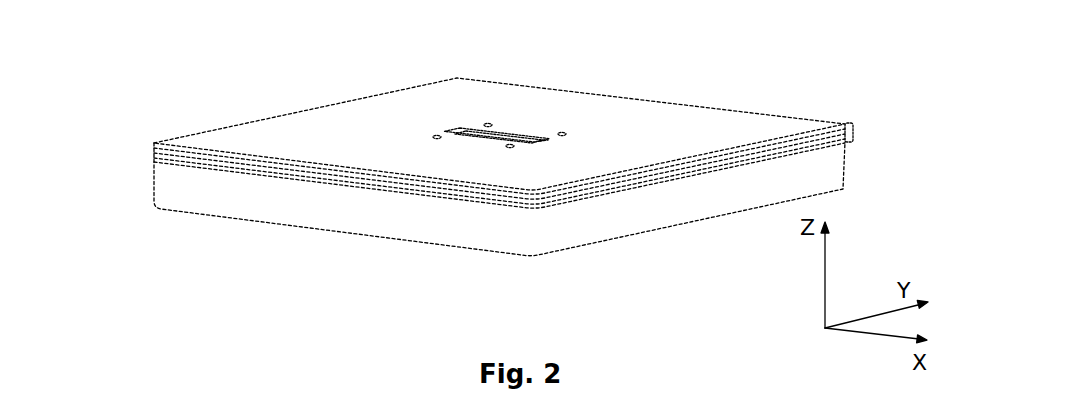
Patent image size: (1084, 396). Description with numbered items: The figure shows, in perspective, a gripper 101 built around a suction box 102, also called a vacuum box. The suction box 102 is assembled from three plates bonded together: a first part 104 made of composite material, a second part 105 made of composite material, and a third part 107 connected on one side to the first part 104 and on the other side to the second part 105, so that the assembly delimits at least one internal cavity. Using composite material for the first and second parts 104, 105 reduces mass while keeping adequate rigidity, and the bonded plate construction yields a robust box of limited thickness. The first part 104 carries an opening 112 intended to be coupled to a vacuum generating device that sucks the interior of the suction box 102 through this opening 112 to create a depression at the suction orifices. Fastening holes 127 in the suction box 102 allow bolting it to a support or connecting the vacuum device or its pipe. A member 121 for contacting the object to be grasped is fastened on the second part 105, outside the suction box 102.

The gripper 101 is at (489, 163).
The suction box 102 is at (855, 131).
The first part 104 is at (312, 126).
The second part 105 is at (153, 155).
The third part 107 is at (423, 183).
The opening 112 is at (535, 142).
The member 121 is at (297, 210).
The fastening holes 127 is at (562, 134).